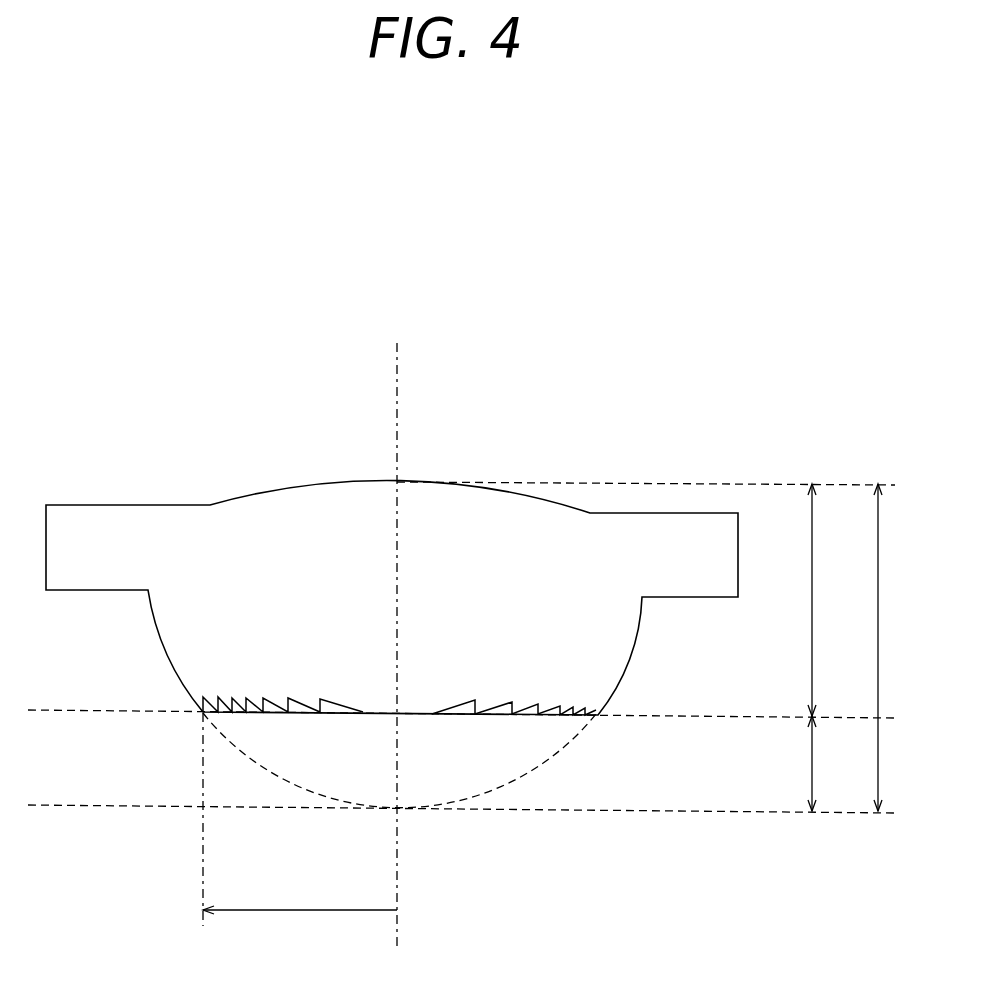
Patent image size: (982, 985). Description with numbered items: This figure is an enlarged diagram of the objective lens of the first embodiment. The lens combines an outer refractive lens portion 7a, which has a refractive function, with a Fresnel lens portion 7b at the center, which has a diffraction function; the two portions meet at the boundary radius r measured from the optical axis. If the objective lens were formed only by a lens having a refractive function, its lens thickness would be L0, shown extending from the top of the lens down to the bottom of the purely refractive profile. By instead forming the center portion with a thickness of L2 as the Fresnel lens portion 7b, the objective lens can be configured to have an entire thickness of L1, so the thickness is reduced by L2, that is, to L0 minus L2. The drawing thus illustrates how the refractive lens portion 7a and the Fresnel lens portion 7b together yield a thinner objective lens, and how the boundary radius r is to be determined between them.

The refractive lens portion 7a is at (170, 662).
The Fresnel lens portion 7b is at (452, 721).
The lens thickness L0 is at (861, 647).
The entire thickness L1 is at (793, 600).
The thickness of the center portion L2 is at (793, 763).
The boundary radius r is at (300, 819).